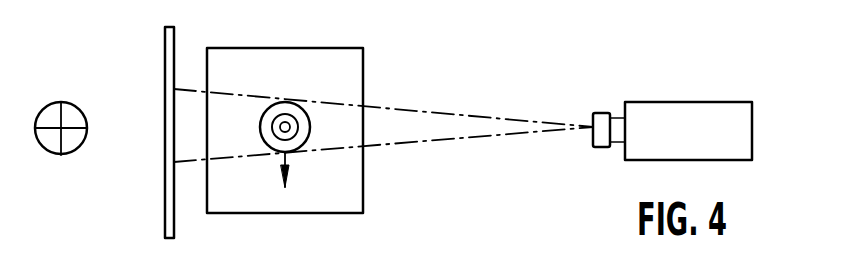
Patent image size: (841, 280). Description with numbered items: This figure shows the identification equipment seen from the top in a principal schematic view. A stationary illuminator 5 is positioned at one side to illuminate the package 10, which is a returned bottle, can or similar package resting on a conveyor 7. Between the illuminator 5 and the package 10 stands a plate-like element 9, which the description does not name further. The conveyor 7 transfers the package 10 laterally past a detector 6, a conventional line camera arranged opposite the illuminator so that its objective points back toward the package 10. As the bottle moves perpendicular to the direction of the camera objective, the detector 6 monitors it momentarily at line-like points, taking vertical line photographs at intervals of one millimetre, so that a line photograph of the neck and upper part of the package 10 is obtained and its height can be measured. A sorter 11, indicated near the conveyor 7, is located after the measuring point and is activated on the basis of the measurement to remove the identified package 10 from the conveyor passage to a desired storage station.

The stationary illuminator 5 is at (67, 112).
The detector 6 is at (733, 138).
The conveyor 7 is at (247, 198).
The target plate / screen 9 is at (167, 58).
The package 10 is at (307, 122).
The sorter 11 is at (290, 159).